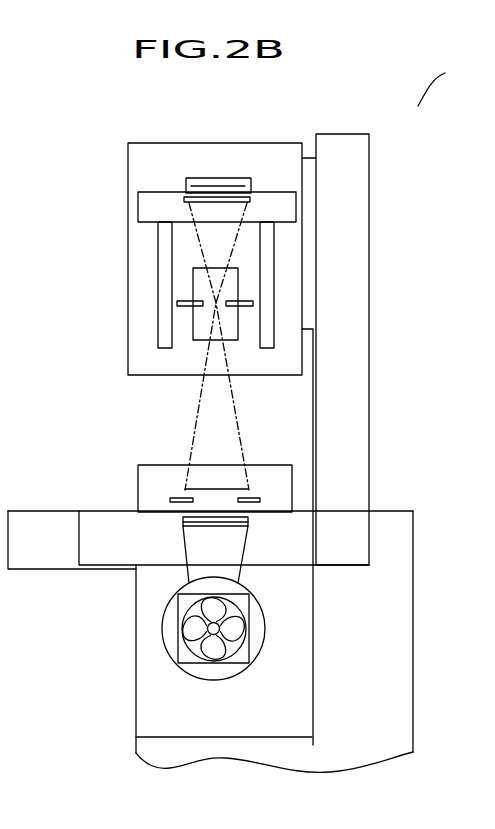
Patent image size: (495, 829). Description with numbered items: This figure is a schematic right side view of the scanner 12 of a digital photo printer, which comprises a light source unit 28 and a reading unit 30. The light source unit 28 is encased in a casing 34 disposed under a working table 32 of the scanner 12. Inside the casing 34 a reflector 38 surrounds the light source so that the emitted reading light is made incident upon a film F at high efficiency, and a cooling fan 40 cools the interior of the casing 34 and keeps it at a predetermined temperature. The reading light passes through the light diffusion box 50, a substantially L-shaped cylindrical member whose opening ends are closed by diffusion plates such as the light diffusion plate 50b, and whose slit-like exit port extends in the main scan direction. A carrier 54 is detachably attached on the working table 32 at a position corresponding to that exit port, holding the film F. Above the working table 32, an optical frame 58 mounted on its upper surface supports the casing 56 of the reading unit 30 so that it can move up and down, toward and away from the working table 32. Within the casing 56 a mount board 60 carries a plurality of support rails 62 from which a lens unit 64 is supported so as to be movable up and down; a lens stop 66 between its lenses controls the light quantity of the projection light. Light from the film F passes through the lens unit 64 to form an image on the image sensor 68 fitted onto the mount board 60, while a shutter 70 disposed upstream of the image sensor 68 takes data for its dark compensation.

The scanner 12 is at (409, 118).
The light source unit 28 is at (150, 714).
The reading unit 30 is at (141, 351).
The working table 32 is at (52, 511).
The casing 34 is at (302, 745).
The reflector 38 is at (263, 604).
The cooling fan 40 is at (248, 652).
The light diffusion box 50 is at (230, 545).
The light diffusion plate 50b is at (192, 540).
The carrier 54 is at (140, 465).
The film F is at (185, 489).
The casing 56 is at (128, 238).
The optical frame 58 is at (357, 228).
The mount board 60 is at (138, 204).
The support rails 62 is at (158, 275).
The lens unit 64 is at (231, 340).
The lens stop 66 is at (177, 303).
The image sensor 68 is at (218, 178).
The shutter 70 is at (275, 182).